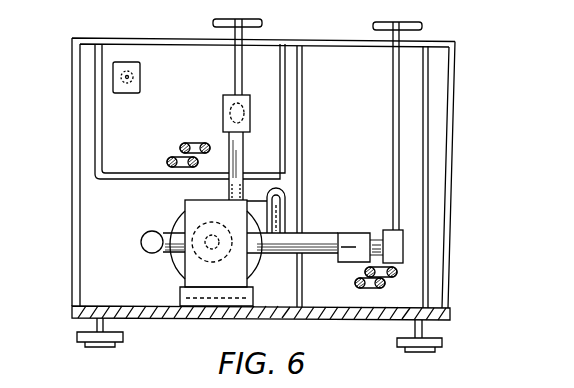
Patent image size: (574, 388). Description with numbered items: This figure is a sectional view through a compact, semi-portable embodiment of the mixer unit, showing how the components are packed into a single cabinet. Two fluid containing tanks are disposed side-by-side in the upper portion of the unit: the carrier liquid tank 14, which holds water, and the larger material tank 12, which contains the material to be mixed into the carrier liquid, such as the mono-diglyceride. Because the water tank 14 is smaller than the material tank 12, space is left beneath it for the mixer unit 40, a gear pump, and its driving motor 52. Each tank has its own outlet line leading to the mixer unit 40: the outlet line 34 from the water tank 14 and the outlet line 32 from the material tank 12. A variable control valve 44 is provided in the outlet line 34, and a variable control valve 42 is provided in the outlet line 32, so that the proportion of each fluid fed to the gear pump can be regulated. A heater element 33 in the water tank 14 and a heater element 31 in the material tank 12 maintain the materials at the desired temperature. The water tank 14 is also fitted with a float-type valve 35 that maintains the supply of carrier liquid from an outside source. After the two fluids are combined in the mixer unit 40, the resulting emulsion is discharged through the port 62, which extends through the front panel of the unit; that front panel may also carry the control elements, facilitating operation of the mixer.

The carrier liquid tank 14 is at (97, 102).
The material tank 12 is at (305, 120).
The float-type valve 35 is at (143, 80).
The variable control valve 44 is at (222, 105).
The tank outlet line 34 is at (244, 146).
The heater element 33 is at (170, 158).
The mixer unit 40 is at (175, 263).
The driving motor 52 is at (176, 215).
The discharge port 62 is at (142, 237).
The tank outlet line 32 is at (315, 243).
The variable control valve 42 is at (383, 229).
The heater element 31 is at (354, 283).